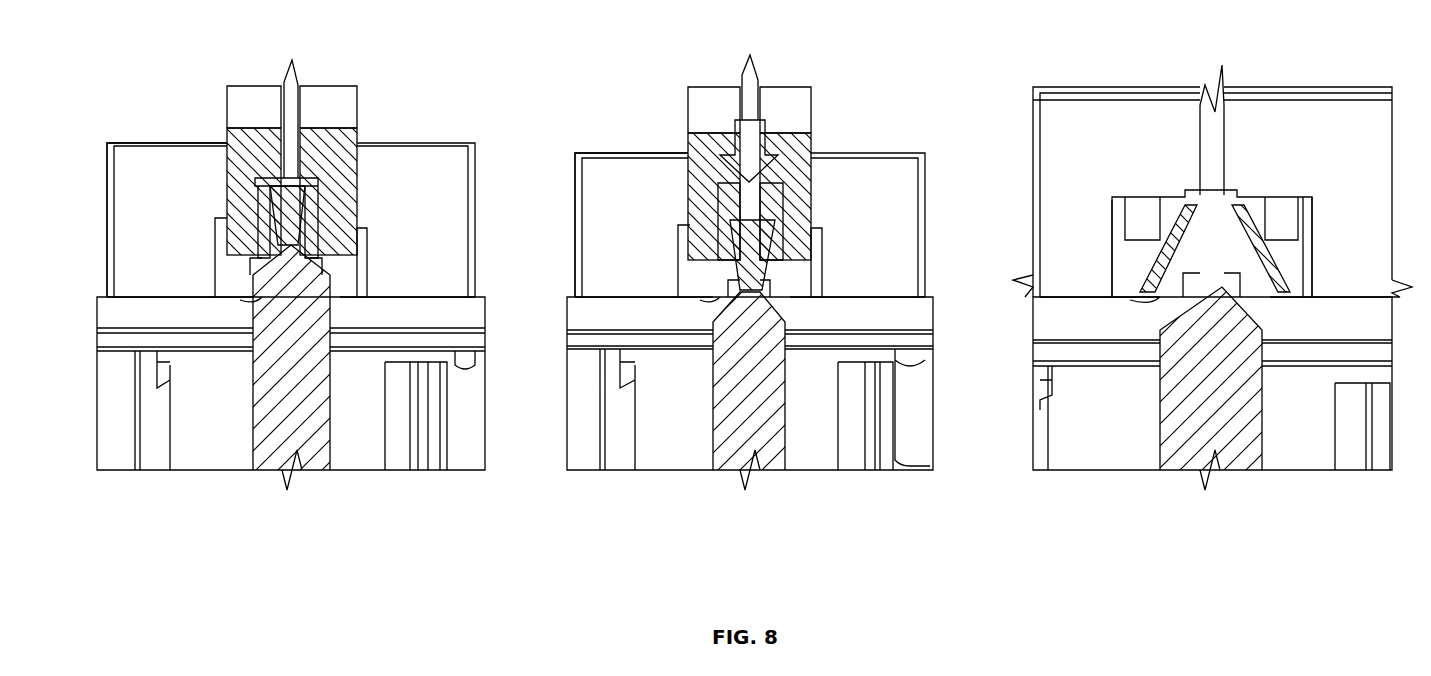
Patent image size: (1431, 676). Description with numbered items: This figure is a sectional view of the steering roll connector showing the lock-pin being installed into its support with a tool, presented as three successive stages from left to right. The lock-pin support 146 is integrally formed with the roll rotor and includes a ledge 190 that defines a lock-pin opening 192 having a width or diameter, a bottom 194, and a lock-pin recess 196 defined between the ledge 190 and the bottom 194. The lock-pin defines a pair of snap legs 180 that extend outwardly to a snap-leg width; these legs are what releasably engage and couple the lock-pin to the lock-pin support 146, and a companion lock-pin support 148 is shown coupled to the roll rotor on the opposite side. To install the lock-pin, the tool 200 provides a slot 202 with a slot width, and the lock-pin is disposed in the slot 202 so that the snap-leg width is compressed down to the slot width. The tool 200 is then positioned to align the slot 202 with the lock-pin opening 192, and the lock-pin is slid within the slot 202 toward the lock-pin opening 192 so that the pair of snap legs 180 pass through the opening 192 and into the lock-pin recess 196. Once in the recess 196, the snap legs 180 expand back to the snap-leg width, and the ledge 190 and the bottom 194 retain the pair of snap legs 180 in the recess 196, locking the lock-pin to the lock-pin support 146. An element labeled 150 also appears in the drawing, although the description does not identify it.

The lock-pin support 146 is at (214, 214).
The lock-pin support 148 is at (368, 258).
The housing cap 150 is at (262, 185).
The snap legs 180 is at (262, 198).
The ledge 190 is at (250, 262).
The lock-pin opening 192 is at (240, 270).
The bottom 194 is at (365, 296).
The lock-pin recess 196 is at (242, 300).
The tool 200 is at (308, 138).
The slot 202 is at (225, 205).